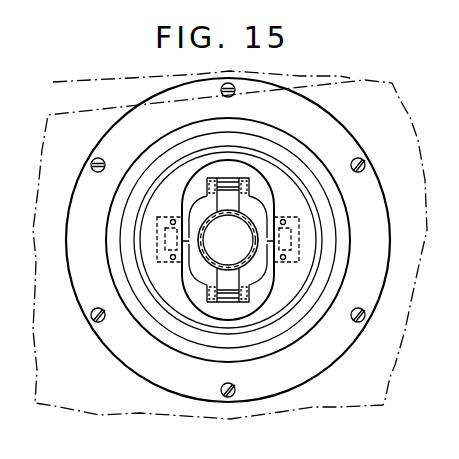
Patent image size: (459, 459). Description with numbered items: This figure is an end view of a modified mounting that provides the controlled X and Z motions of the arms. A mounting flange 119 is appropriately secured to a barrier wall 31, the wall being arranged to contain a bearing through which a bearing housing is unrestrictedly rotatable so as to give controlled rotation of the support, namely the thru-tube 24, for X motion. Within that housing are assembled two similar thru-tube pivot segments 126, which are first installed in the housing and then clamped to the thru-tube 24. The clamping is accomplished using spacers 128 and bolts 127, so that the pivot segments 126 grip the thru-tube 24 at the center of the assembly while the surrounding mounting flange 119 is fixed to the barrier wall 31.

The thru-tube 24 is at (238, 258).
The barrier wall 31 is at (337, 75).
The mounting flange 119 is at (349, 347).
The thru-tube pivot segments 126 is at (194, 214).
The bolts 127 is at (249, 182).
The spacers 128 is at (229, 198).